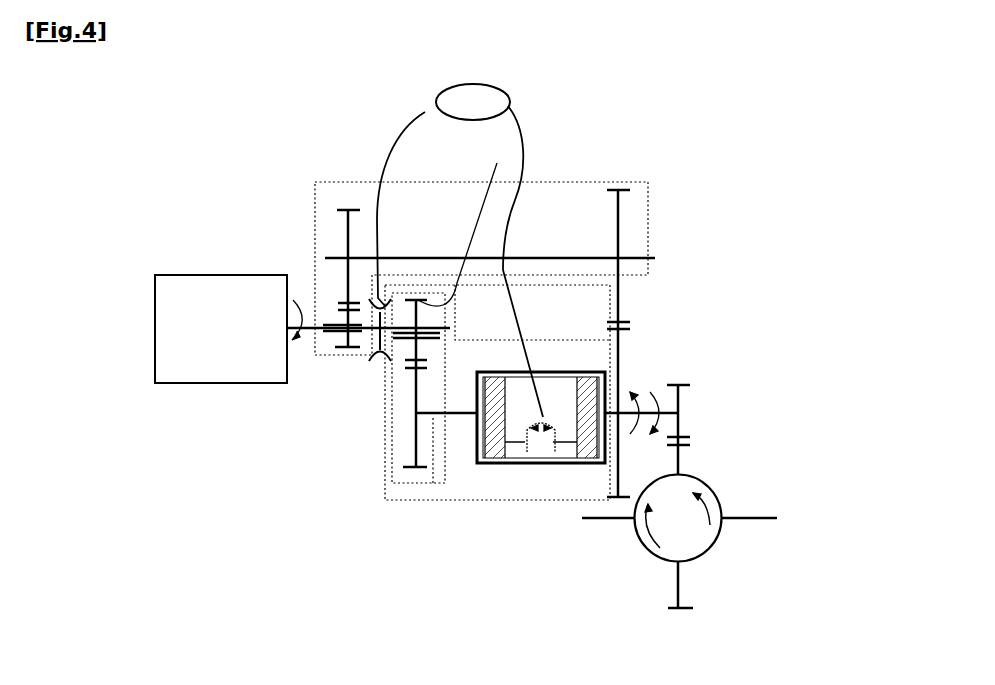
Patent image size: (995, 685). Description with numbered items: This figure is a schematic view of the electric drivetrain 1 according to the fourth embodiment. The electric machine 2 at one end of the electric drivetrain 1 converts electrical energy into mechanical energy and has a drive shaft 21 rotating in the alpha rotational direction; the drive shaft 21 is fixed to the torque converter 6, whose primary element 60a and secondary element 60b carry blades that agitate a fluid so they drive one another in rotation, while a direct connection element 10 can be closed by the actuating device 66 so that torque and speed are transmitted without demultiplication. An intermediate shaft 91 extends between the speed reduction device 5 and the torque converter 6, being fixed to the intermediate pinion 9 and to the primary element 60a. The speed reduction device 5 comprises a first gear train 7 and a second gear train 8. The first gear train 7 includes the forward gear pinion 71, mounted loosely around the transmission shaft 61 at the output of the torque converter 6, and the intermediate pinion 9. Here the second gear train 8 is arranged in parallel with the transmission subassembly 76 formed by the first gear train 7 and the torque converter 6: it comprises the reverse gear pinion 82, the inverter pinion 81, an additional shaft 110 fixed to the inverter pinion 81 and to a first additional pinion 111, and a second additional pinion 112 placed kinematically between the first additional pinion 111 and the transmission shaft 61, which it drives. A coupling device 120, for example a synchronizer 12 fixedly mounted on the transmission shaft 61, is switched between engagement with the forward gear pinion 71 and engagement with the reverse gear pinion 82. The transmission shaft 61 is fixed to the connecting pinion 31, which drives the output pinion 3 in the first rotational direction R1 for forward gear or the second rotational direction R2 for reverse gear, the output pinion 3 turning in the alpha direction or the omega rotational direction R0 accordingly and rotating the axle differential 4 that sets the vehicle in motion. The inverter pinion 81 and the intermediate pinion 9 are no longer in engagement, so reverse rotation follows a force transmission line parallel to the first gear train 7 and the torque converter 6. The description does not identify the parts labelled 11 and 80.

The electric drivetrain 1 is at (90, 213).
The electric machine 2 is at (173, 328).
The drive shaft 21 is at (310, 250).
The second gear train 8 is at (358, 181).
The inverter pinion 81 is at (345, 240).
The reverse gear pinion 82 is at (345, 350).
The coupling device 120 is at (420, 262).
The synchronizer 12 is at (385, 307).
The actuating device 66 is at (505, 99).
The forward gear pinion 71 is at (464, 225).
The additional shaft 110 is at (528, 253).
The first additional pinion 111 is at (615, 218).
The gear train 11 is at (648, 252).
The second additional pinion 112 is at (620, 352).
The output shaft 80 is at (630, 392).
The transmission shaft 61 is at (656, 396).
The connecting pinion 31 is at (680, 397).
The output pinion 3 is at (683, 459).
The axle differential 4 is at (687, 533).
The speed reduction device 5 is at (345, 405).
The first gear train 7 is at (413, 481).
The transmission subassembly 76 is at (385, 490).
The intermediate pinion 9 is at (413, 399).
The intermediate shaft 91 is at (440, 483).
The torque converter 6 is at (515, 500).
The primary element 60a is at (482, 456).
The secondary element 60b is at (582, 462).
The direct connection element 10 is at (538, 466).
The omega rotational direction R0 is at (768, 502).
The first rotational direction R1 is at (642, 537).
The second rotational direction R2 is at (720, 503).